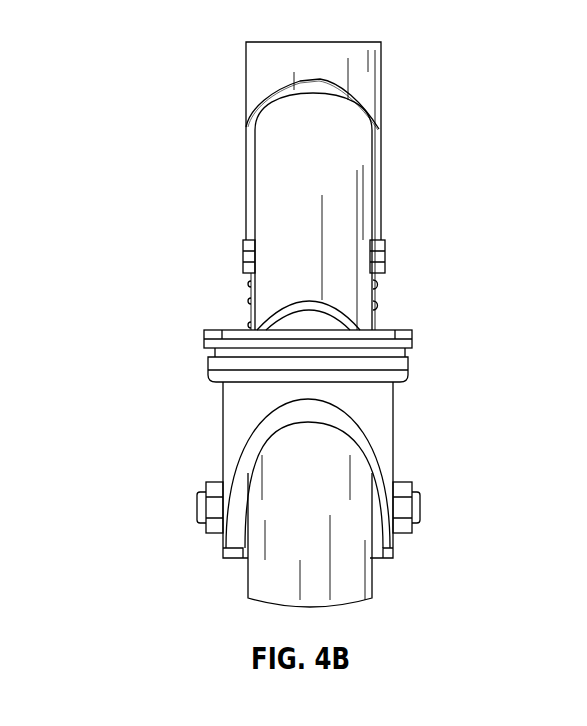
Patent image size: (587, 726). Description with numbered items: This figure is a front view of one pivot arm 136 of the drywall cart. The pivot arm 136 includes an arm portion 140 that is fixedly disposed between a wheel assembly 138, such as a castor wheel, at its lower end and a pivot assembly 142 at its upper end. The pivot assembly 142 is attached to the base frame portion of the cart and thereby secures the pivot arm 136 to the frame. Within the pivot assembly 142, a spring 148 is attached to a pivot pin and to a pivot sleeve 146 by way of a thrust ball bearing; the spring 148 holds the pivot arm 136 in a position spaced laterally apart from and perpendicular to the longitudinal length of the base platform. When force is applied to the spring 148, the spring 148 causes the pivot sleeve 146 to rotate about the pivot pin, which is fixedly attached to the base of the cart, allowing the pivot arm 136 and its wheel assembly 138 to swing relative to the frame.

The pivot arm 136 is at (133, 63).
The wheel assembly 138 is at (401, 430).
The arm portion 140 is at (258, 282).
The pivot assembly 142 is at (406, 175).
The pivot sleeve 146 is at (383, 133).
The spring 148 is at (377, 313).